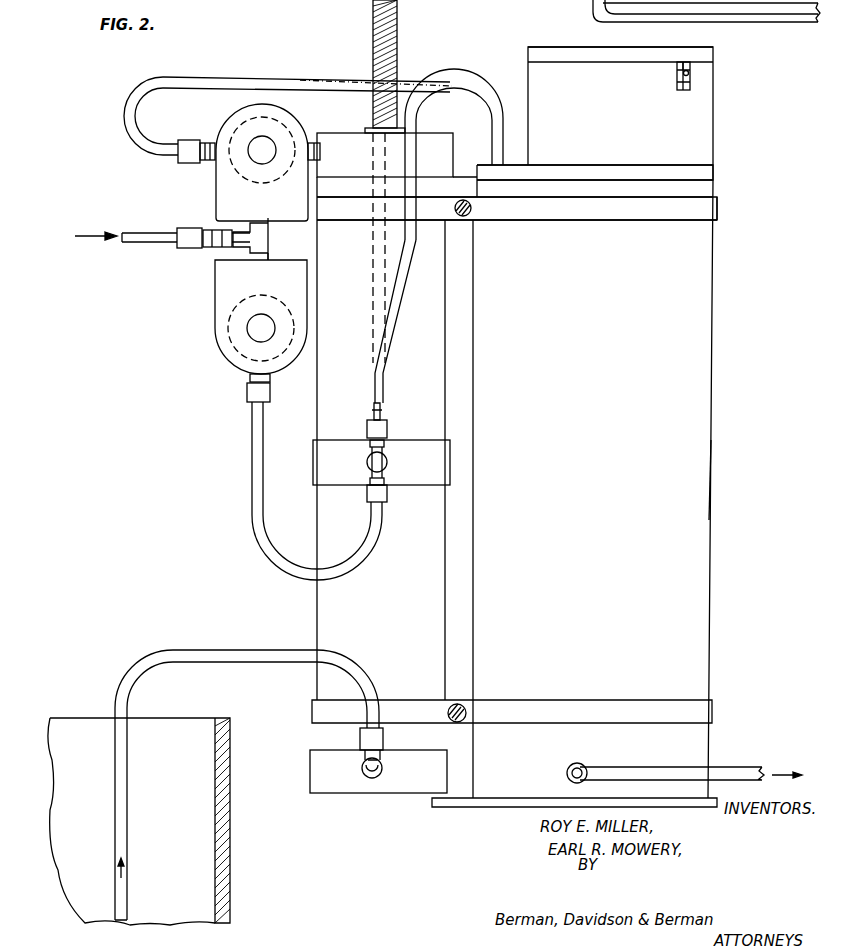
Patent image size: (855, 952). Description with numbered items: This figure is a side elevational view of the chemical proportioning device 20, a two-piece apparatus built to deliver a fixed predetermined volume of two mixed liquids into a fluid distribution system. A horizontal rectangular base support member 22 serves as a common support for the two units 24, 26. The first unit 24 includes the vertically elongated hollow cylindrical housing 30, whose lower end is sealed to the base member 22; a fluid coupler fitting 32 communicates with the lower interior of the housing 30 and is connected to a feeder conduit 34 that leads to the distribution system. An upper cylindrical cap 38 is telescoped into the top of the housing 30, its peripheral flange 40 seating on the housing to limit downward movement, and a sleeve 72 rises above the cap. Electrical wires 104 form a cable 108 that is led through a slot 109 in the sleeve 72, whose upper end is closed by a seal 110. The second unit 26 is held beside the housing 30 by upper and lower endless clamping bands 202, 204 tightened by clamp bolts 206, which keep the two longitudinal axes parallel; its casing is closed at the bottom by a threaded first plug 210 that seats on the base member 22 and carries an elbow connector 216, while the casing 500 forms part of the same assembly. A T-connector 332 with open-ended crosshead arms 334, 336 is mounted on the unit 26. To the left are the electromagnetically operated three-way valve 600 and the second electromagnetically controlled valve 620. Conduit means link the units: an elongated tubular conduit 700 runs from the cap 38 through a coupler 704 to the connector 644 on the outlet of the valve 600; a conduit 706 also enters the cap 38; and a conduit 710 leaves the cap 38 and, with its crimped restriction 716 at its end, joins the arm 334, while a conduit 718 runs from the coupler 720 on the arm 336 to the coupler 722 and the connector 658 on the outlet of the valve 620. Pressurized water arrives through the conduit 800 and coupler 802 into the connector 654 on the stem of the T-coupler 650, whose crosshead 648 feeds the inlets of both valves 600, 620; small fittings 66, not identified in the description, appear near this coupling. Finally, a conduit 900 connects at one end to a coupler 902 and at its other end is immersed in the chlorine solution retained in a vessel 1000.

The chemical proportioning device 20 is at (348, 49).
The base support member 22 is at (450, 809).
The unit 24 is at (712, 414).
The unit 26 is at (292, 594).
The housing 30 is at (709, 462).
The fluid coupler fitting 32 is at (583, 763).
The feeder conduit 34 is at (803, 22).
The upper cylindrical cap 38 is at (716, 168).
The peripheral flange 40 is at (640, 162).
The connectors 66 is at (279, 240).
The sleeve 72 is at (714, 135).
The wire 104 is at (675, 86).
The cable 108 is at (692, 78).
The slot 109 is at (690, 70).
The seal 110 is at (638, 42).
The upper clamping band 202 is at (719, 210).
The lower clamping band 204 is at (714, 712).
The clamp bolt 206 is at (468, 217).
The first plug 210 is at (345, 796).
The elbow connector 216 is at (382, 769).
The T-connector 332 is at (368, 464).
The crosshead arm 334 is at (386, 442).
The crosshead arm 336 is at (386, 484).
The casing 500 is at (312, 141).
The three-way valve 600 is at (214, 195).
The second valve 620 is at (213, 331).
The connector 644 is at (206, 141).
The crosshead 648 is at (270, 262).
The T-coupler 650 is at (245, 226).
The connector 654 is at (210, 250).
The connector 658 is at (249, 380).
The conduit 700 is at (284, 73).
The coupler 704 is at (191, 165).
The conduit 706 is at (431, 70).
The conduit 710 is at (411, 244).
The nipple 716 is at (383, 412).
The conduit 718 is at (350, 570).
The coupler 720 is at (387, 504).
The coupler 722 is at (247, 402).
The conduit 800 is at (140, 244).
The coupler 802 is at (180, 250).
The conduit 900 is at (273, 664).
The coupler 902 is at (392, 722).
The vessel 1000 is at (232, 823).